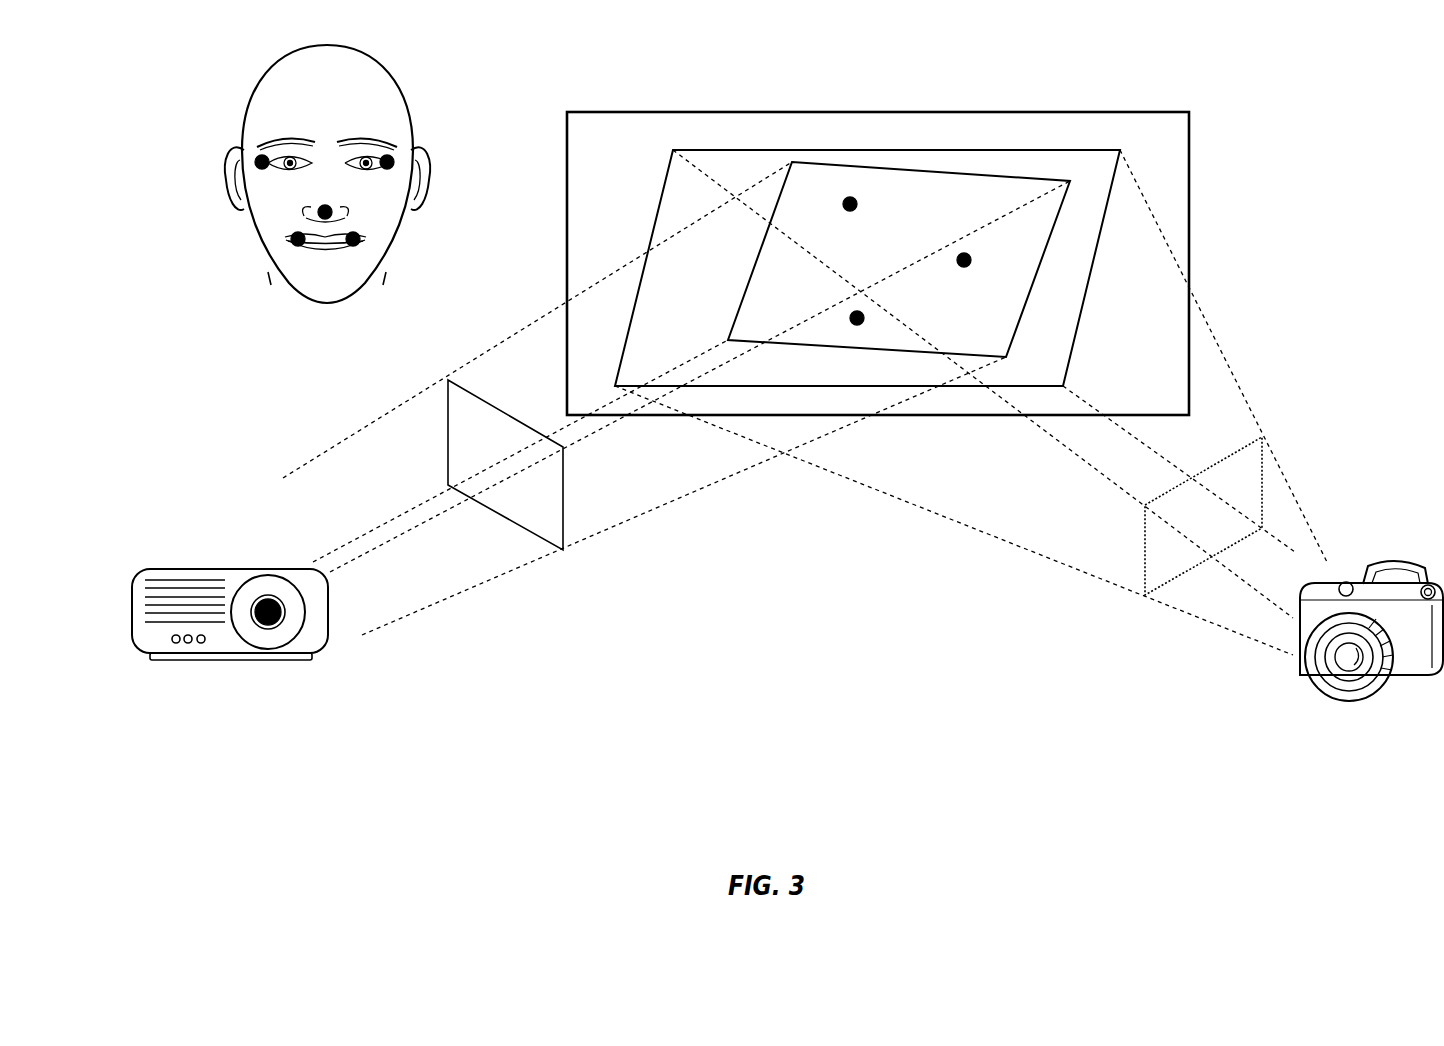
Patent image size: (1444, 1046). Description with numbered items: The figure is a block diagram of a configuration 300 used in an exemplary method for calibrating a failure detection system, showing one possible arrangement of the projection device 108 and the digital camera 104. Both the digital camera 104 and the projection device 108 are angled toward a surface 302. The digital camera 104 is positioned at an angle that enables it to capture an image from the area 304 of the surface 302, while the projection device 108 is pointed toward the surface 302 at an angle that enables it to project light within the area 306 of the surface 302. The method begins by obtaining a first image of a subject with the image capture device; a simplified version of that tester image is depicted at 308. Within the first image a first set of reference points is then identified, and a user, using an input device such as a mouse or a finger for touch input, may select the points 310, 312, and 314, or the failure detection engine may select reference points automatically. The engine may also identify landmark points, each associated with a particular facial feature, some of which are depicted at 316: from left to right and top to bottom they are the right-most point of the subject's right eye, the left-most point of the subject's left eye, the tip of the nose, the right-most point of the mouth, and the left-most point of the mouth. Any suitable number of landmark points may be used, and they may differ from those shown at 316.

The projection calibration system 300 is at (138, 832).
The surface 302 is at (881, 111).
The area 304 is at (1093, 258).
The area 306 is at (751, 270).
The tester image 308 is at (212, 72).
The point 310 is at (849, 195).
The point 312 is at (965, 250).
The point 314 is at (857, 327).
The landmark points 316 is at (308, 130).
The projection device 108 is at (195, 562).
The digital camera 104 is at (1270, 746).